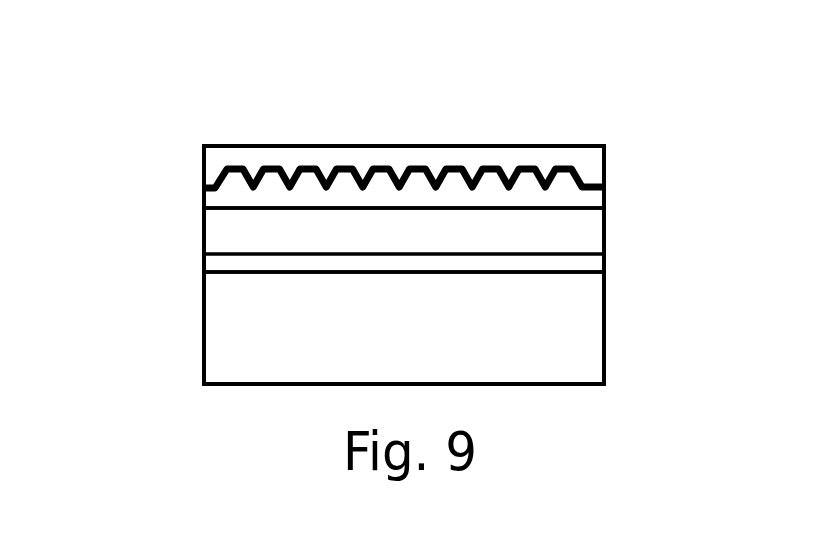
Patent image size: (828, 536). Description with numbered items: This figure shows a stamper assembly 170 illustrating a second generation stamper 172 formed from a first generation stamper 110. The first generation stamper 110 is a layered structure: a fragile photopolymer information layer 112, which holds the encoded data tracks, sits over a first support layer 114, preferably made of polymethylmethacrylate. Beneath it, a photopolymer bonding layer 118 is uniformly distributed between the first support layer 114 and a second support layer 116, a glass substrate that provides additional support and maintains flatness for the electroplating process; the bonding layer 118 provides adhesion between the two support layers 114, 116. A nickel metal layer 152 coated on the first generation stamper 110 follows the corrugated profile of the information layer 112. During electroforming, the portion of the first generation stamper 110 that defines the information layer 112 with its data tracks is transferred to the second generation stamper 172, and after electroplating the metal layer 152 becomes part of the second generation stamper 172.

The stamper assembly 170 is at (281, 104).
The second generation stamper 172 is at (191, 168).
The metal layer 152 is at (576, 172).
The information layer 112 is at (605, 200).
The first support layer 114 is at (605, 233).
The photopolymer bonding layer 118 is at (605, 262).
The second support layer 116 is at (605, 353).
The first generation stamper 110 is at (191, 273).